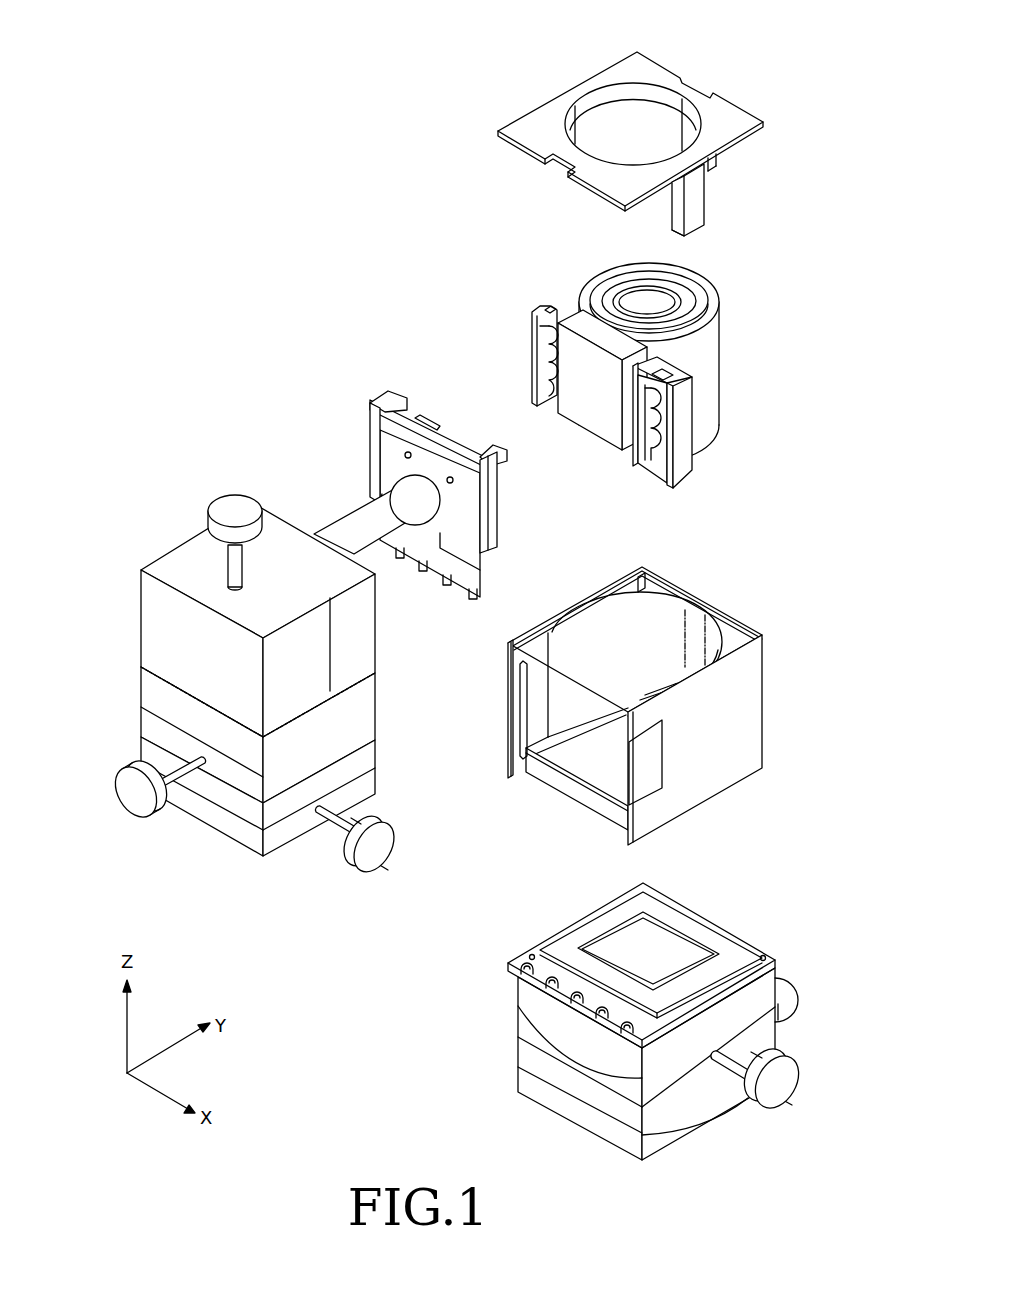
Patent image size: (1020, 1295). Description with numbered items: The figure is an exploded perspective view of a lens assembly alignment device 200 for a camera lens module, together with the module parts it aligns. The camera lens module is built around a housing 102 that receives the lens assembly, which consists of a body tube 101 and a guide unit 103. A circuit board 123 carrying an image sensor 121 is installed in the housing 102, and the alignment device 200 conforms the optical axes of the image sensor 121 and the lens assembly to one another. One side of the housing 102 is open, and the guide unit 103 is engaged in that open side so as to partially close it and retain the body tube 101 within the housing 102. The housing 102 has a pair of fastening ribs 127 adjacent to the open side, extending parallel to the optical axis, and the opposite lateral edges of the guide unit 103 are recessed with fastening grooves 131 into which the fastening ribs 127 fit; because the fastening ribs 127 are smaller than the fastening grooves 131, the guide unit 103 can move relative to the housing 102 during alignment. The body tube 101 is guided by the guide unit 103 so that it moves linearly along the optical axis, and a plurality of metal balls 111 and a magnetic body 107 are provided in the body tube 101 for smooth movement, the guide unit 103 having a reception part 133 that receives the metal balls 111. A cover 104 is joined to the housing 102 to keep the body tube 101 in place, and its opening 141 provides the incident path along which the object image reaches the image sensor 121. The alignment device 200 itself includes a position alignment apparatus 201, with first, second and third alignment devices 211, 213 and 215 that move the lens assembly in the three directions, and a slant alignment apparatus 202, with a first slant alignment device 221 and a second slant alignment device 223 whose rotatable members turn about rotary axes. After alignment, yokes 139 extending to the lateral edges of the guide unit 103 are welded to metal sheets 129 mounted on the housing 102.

The lens assembly alignment device 200 is at (391, 197).
The cover 104 is at (660, 126).
The opening 141 is at (673, 107).
The body tube 101 is at (635, 375).
The magnetic body 107 is at (595, 422).
The metal balls 111 is at (548, 360).
The guide unit 103 is at (438, 475).
The yokes 139 is at (378, 423).
The reception part 133 is at (494, 491).
The fastening grooves 131 is at (488, 545).
The position alignment apparatus 201 is at (248, 698).
The third alignment device 215 is at (122, 606).
The second alignment device 213 is at (130, 738).
The first alignment device 211 is at (227, 858).
The housing 102 is at (617, 708).
The fastening ribs 127 is at (522, 707).
The metal sheets 129 is at (650, 772).
The slant alignment apparatus 202 is at (642, 1025).
The first slant alignment device 221 is at (510, 1080).
The second slant alignment device 223 is at (792, 977).
The circuit board 123 is at (758, 952).
The image sensor 121 is at (613, 940).